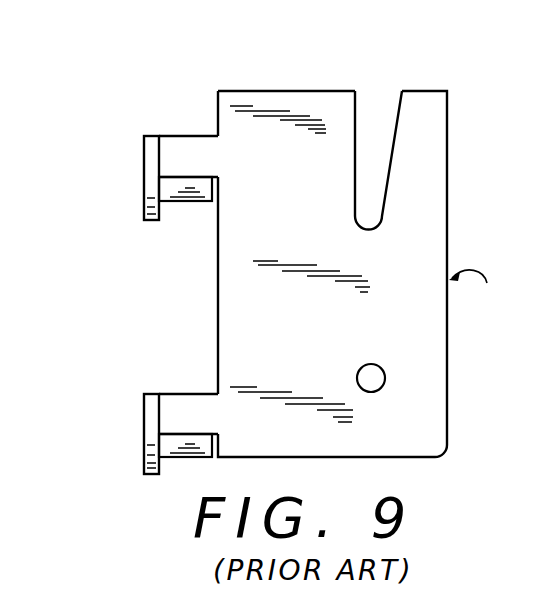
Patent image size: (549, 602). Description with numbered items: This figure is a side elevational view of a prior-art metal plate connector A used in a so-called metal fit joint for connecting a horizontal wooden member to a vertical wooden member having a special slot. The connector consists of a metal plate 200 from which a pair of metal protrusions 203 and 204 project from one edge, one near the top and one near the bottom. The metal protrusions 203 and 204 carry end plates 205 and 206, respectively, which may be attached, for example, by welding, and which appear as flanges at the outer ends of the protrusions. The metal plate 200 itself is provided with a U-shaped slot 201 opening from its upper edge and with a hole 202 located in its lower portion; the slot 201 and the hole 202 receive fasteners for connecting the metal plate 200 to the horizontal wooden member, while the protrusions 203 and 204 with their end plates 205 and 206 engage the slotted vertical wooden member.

The metal plate 200 is at (427, 213).
The U-shaped slot 201 is at (375, 147).
The hole 202 is at (371, 378).
The metal protrusion 203 is at (181, 142).
The metal protrusion 204 is at (175, 398).
The end plate 205 is at (148, 195).
The end plate 206 is at (148, 417).
The metal plate connector A is at (472, 291).